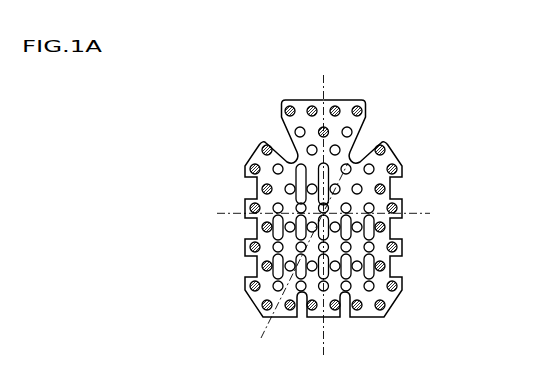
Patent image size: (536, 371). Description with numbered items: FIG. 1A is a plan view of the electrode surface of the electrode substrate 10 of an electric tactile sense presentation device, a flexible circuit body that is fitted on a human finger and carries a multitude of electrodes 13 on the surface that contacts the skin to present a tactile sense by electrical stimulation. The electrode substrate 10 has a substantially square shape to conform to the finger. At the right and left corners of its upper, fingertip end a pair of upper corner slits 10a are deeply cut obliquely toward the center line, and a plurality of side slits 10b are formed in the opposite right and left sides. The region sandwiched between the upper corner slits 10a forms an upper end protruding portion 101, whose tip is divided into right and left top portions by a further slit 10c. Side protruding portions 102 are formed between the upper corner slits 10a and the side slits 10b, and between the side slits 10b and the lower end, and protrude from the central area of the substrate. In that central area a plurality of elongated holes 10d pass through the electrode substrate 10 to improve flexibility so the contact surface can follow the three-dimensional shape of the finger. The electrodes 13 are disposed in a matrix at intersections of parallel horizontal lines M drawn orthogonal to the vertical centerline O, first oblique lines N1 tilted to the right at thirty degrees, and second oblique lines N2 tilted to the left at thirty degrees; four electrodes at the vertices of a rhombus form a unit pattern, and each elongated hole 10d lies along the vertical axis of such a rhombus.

The electrode substrate 10 is at (373, 88).
The upper corner slit 10a is at (279, 145).
The side slit 10b is at (256, 190).
The slit 10c is at (322, 100).
The elongated hole 10d is at (295, 261).
The upper end protruding portion 101 is at (343, 100).
The side protruding portion 102 is at (242, 207).
The electrode 13 is at (247, 248).
The vertical centerline O is at (322, 94).
The horizontal line M is at (418, 215).
The first oblique line N1 is at (287, 150).
The second oblique line N2 is at (370, 118).